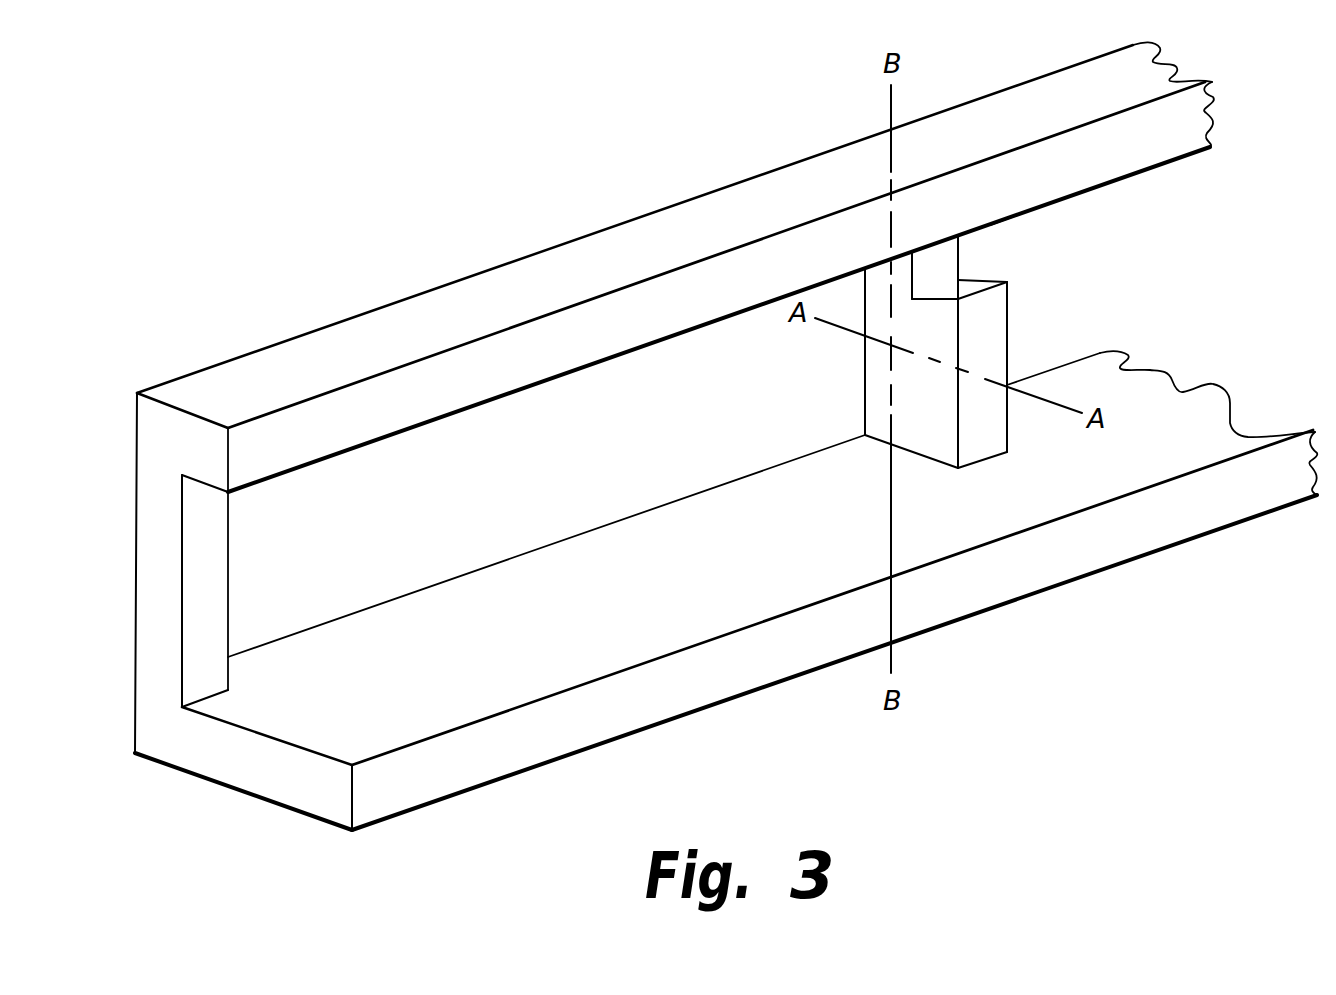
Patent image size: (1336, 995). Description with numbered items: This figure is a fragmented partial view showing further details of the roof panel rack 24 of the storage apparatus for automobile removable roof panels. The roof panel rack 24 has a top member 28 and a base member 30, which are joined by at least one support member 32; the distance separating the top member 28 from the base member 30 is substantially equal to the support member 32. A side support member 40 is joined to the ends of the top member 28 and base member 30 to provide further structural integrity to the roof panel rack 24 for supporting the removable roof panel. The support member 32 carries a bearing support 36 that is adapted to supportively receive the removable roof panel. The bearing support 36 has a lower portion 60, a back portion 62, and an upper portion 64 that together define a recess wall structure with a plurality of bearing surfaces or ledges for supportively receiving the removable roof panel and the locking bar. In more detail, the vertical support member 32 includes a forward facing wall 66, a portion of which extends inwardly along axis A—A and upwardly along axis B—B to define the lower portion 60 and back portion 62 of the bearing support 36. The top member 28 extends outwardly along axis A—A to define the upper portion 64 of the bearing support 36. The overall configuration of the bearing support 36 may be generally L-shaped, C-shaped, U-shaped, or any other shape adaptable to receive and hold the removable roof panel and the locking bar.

The roof panel rack 24 is at (234, 135).
The top member 28 is at (480, 288).
The base member 30 is at (555, 673).
The support member 32 is at (865, 387).
The bearing support 36 is at (1076, 222).
The side support member 40 is at (212, 590).
The lower portion 60 is at (985, 285).
The back portion 62 is at (935, 263).
The upper portion 64 is at (990, 222).
The forward facing wall 66 is at (990, 346).